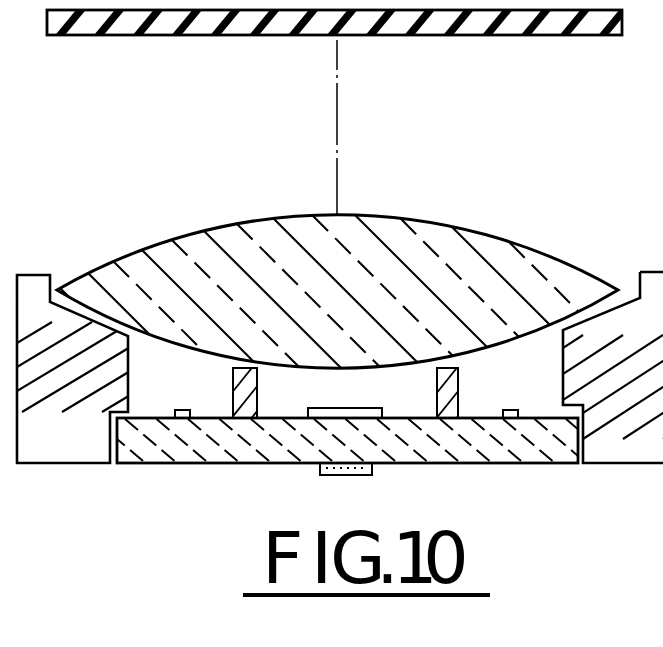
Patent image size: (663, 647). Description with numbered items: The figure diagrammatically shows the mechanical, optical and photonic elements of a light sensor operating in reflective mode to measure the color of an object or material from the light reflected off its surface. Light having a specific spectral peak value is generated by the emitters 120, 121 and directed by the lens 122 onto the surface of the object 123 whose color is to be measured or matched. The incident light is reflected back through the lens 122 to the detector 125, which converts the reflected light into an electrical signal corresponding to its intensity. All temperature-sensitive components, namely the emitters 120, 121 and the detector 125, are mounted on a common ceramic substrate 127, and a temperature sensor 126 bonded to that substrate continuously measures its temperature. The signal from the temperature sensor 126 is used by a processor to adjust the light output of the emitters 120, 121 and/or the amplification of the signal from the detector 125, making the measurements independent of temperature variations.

The emitter 120 is at (181, 409).
The emitter 121 is at (511, 409).
The lens 122 is at (455, 226).
The object 123 is at (537, 36).
The detector 125 is at (356, 408).
The temperature sensor 126 is at (372, 474).
The substrate 127 is at (178, 452).